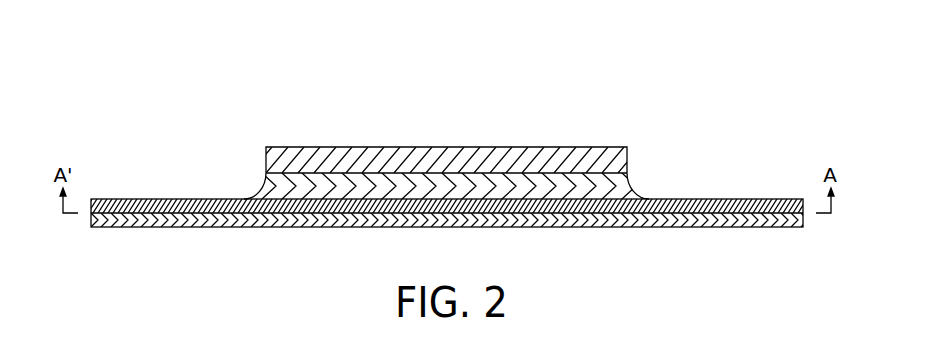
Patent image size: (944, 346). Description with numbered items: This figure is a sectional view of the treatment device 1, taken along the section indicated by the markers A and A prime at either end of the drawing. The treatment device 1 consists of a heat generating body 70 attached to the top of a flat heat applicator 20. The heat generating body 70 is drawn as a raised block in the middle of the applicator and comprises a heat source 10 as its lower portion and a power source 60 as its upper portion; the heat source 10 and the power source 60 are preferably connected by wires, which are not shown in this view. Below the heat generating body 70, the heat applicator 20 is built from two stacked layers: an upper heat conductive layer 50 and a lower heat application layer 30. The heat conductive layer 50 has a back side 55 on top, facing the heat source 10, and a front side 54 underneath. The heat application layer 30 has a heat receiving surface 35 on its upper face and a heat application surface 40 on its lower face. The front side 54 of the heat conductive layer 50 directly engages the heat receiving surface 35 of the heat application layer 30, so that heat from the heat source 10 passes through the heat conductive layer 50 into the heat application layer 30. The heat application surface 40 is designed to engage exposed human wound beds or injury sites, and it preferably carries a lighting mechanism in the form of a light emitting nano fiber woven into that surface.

The treatment device 1 is at (177, 93).
The heat source 10 is at (277, 190).
The heat applicator 20 is at (716, 248).
The heat application layer 30 is at (775, 218).
The heat receiving surface 35 is at (122, 215).
The heat application surface 40 is at (224, 227).
The heat conductive layer 50 is at (716, 207).
The front side 54 is at (449, 237).
The back side 55 is at (180, 198).
The power source 60 is at (278, 157).
The heat generating body 70 is at (643, 123).